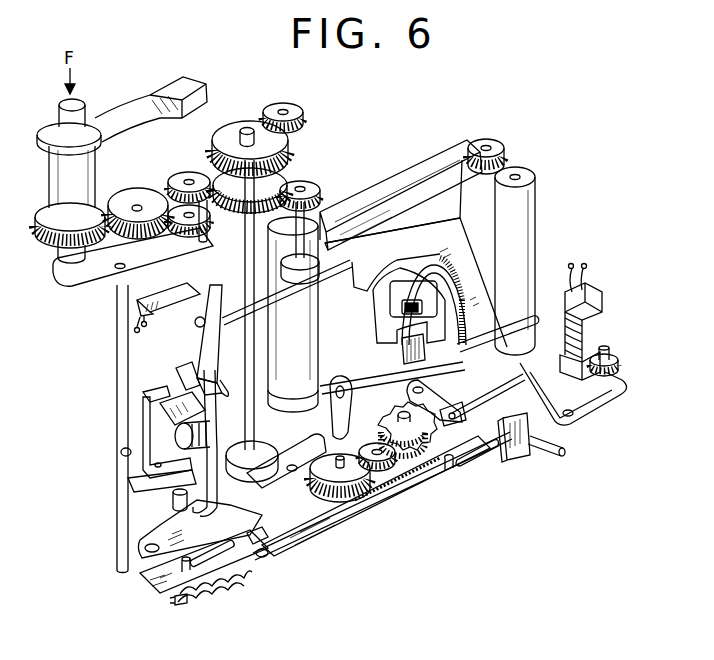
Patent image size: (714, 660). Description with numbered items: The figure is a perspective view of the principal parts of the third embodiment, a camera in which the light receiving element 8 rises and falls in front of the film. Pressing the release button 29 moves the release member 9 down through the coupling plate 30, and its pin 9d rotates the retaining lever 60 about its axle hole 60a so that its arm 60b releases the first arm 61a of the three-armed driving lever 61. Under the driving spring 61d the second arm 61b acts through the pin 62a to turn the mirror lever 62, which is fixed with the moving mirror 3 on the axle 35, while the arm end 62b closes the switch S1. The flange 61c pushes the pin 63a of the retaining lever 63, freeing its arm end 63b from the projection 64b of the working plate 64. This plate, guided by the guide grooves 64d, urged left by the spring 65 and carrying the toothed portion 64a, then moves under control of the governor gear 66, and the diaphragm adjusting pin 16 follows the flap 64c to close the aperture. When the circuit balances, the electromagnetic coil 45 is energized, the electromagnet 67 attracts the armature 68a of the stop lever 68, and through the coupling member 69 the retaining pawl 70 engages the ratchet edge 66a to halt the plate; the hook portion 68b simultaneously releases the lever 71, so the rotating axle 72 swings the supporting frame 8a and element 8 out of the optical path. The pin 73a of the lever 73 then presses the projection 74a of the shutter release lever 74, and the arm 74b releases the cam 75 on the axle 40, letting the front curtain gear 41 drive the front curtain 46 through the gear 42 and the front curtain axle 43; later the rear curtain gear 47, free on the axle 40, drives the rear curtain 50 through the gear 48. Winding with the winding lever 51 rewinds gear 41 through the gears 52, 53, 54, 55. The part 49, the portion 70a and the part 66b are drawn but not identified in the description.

The moving mirror 3 is at (468, 257).
The light receiving element 8 is at (404, 308).
The supporting frame 8a is at (402, 352).
The release member 9 is at (118, 340).
The pin 9d is at (120, 452).
The diaphragm adjusting pin 16 is at (562, 446).
The release button 29 is at (59, 120).
The coupling plate 30 is at (90, 272).
The axle 35 is at (338, 276).
The axle 40 is at (214, 215).
The front curtain gear 41 is at (226, 182).
The gear 42 is at (306, 186).
The front curtain axle 43 is at (532, 180).
The electromagnetic coil 45 is at (584, 332).
The front curtain 46 is at (375, 212).
The rear curtain gear 47 is at (222, 142).
The gear 48 is at (266, 110).
The roller 49 is at (474, 142).
The rear curtain 50 is at (396, 184).
The winding lever 51 is at (112, 100).
The gear 52 is at (50, 170).
The gear 53 is at (130, 200).
The gear 54 is at (176, 214).
The gear 55 is at (178, 180).
The retaining lever 60 is at (112, 488).
The axle hole 60a is at (140, 478).
The arm 60b is at (166, 392).
The three-armed driving lever 61 is at (220, 478).
The first arm 61a is at (152, 412).
The second arm 61b is at (180, 372).
The flange 61c is at (212, 512).
The driving spring 61d is at (184, 450).
The mirror lever 62 is at (206, 352).
The pin 62a is at (208, 396).
The arm end 62b is at (226, 278).
The retaining lever 63 is at (140, 545).
The pin 63a is at (174, 502).
The arm end 63b is at (274, 574).
The working plate 64 is at (356, 522).
The toothed portion 64a is at (398, 496).
The projection 64b is at (274, 558).
The flap 64c is at (524, 455).
The guide grooves 64d is at (480, 466).
The spring 65 is at (200, 604).
The gear 66 is at (336, 524).
The ratchet edge 66a is at (415, 437).
The slot 66b is at (437, 490).
The electromagnet 67 is at (596, 298).
The stop lever 68 is at (594, 408).
The armature 68a is at (612, 352).
The hook portion 68b is at (450, 309).
The coupling member 69 is at (492, 394).
The retaining pawl 70 is at (446, 394).
The lever end 70a is at (460, 420).
The lever 71 is at (518, 326).
The rotating axle 72 is at (372, 380).
The lever 73 is at (349, 398).
The pin 73a is at (360, 500).
The shutter release lever 74 is at (318, 474).
The projection 74a is at (305, 441).
The arm 74b is at (288, 542).
The cam 75 is at (262, 480).
The switch S1 is at (172, 312).